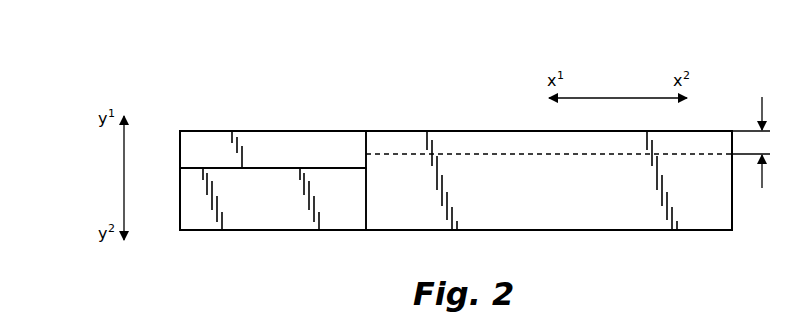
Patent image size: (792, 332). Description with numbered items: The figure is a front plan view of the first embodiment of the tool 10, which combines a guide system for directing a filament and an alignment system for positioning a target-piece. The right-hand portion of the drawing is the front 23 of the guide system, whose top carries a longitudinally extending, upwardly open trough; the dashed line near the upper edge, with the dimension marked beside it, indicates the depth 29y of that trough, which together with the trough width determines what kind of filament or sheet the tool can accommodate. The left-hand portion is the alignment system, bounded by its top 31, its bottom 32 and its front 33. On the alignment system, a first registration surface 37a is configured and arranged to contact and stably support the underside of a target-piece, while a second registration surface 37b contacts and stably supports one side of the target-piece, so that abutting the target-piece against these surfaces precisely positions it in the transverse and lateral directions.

The tool 10 is at (294, 82).
The front 23 is at (549, 180).
The depth of the trough 29y is at (571, 142).
The top 31 is at (190, 167).
The bottom 32 is at (258, 231).
The front 33 is at (273, 199).
The first registration surface 37a is at (208, 168).
The second registration surface 37b is at (273, 149).